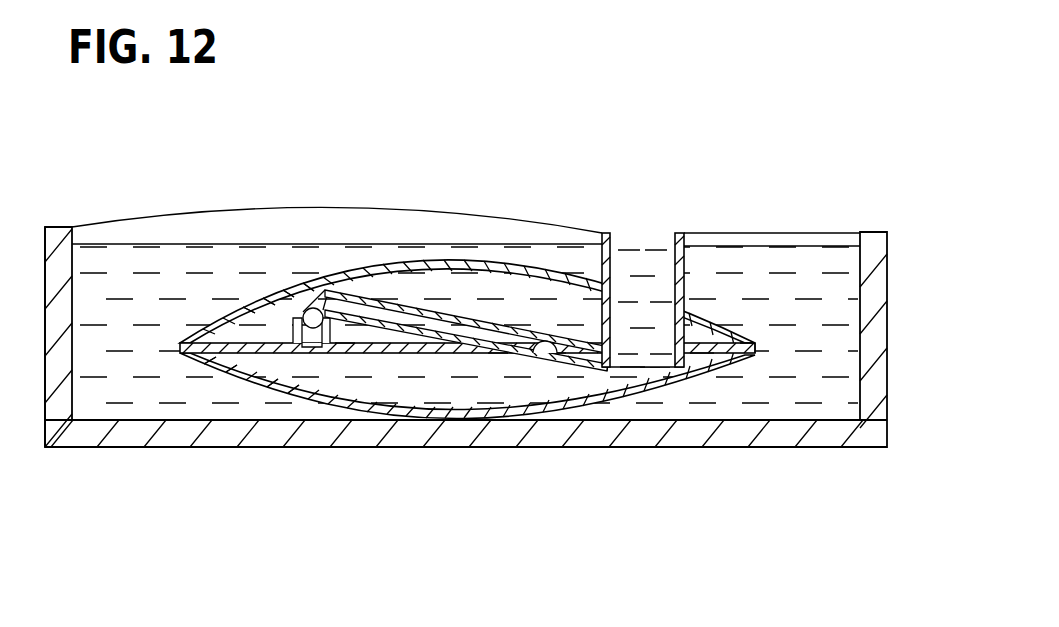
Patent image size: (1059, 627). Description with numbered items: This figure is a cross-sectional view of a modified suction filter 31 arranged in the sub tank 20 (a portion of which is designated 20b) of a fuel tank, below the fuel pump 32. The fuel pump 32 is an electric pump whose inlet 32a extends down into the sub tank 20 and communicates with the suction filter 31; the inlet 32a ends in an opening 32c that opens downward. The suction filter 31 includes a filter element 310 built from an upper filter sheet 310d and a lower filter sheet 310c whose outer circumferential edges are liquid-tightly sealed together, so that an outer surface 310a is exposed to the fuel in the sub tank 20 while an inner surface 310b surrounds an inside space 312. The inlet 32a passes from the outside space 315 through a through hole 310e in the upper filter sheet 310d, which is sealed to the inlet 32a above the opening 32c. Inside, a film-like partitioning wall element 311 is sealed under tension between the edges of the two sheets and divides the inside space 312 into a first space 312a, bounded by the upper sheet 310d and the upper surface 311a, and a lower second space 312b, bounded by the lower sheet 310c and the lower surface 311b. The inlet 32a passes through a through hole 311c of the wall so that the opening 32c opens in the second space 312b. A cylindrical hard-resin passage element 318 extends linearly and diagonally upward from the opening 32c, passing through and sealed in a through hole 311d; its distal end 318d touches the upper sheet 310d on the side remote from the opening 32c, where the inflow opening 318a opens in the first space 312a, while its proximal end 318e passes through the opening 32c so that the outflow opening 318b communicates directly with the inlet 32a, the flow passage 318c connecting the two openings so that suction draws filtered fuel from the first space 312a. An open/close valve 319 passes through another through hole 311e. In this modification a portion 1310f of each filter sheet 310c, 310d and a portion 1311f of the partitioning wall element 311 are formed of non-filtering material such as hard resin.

The sub tank 20 is at (57, 230).
The tank bottom wall 20b is at (437, 440).
The suction filter 31 is at (745, 320).
The fuel pump 32 is at (688, 300).
The inlet 32a is at (719, 264).
The opening 32c is at (633, 370).
The filter element 310 is at (288, 500).
The outer surface 310a is at (254, 312).
The inner surface 310b is at (283, 300).
The lower filter sheet 310c is at (280, 388).
The upper filter sheet 310d is at (228, 375).
The through hole 310e is at (615, 305).
The partitioning wall element 311 is at (398, 355).
The upper surface 311a is at (343, 296).
The lower surface 311b is at (498, 357).
The through hole 311c is at (650, 340).
The through hole 311d is at (556, 358).
The through hole 311e is at (328, 358).
The inside space 312 is at (560, 162).
The first space 312a is at (410, 300).
The second space 312b is at (457, 373).
The outside space 315 is at (383, 240).
The passage element 318 is at (516, 350).
The inflow opening 318a is at (323, 291).
The outflow opening 318b is at (660, 357).
The flow passage 318c is at (507, 333).
The distal end 318d is at (322, 300).
The proximal end 318e is at (660, 353).
The open/close valve 319 is at (312, 334).
The portion of filter element 1310f is at (703, 357).
The portion of partitioning wall element 1311f is at (758, 350).